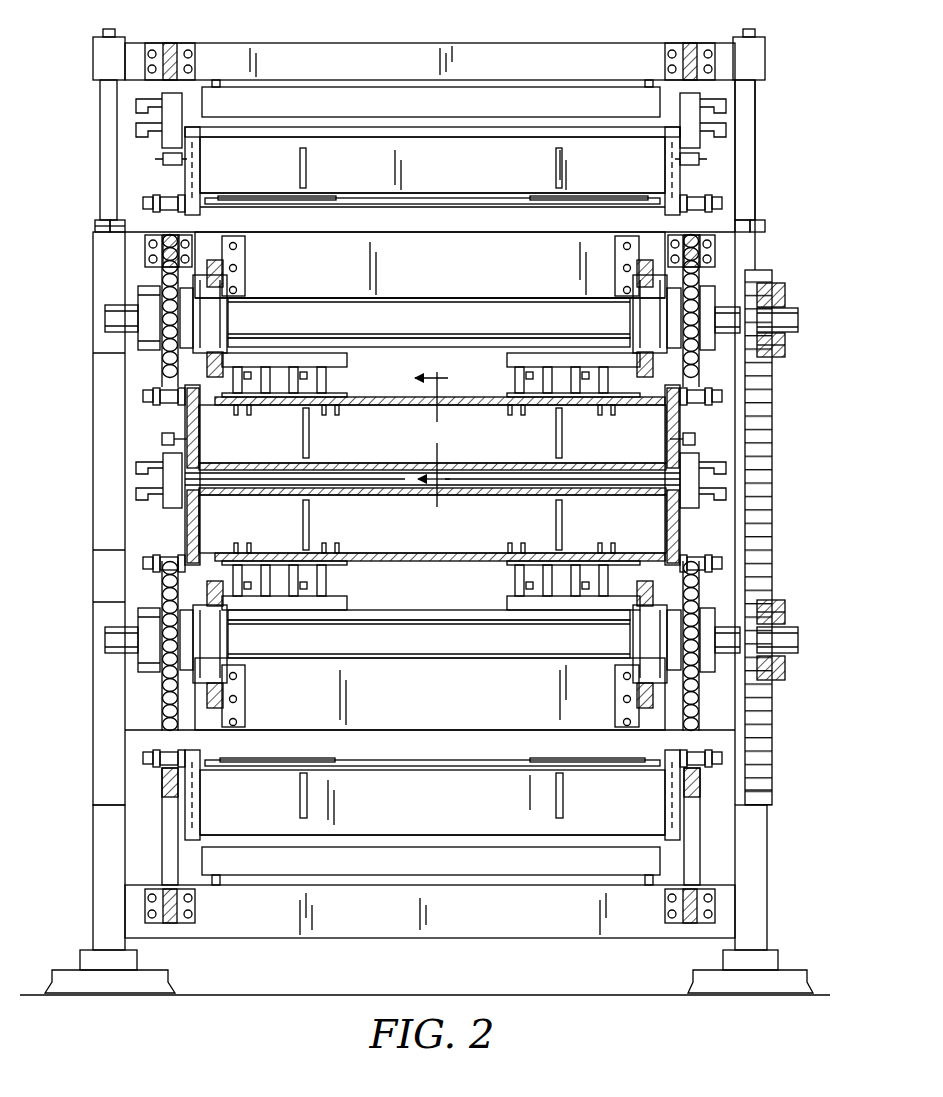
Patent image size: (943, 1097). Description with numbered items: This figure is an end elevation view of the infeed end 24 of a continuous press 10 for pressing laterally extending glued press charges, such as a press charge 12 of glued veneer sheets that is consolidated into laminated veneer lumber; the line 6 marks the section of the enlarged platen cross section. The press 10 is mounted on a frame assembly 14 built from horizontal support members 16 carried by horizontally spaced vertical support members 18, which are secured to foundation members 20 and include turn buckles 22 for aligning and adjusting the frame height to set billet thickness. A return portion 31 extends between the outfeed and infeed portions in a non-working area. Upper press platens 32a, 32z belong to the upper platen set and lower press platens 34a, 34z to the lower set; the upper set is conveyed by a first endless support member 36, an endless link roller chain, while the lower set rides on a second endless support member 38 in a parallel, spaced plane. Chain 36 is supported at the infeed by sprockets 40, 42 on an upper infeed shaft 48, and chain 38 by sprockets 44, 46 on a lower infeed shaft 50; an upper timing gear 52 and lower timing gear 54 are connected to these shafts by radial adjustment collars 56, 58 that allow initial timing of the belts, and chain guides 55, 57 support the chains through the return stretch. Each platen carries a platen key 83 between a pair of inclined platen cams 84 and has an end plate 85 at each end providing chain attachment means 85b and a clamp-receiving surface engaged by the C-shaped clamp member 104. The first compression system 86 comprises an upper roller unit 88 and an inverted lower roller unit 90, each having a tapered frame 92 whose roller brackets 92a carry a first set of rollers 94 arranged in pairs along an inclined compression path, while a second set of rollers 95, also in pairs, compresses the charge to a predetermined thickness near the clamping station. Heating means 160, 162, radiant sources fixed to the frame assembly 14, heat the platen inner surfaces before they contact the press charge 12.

The section line 6 is at (431, 439).
The continuous press 10 is at (792, 128).
The press charge 12 is at (463, 472).
The frame assembly 14 is at (276, 947).
The horizontal support members 16 is at (725, 43).
The vertical support members 18 is at (93, 836).
The foundation members 20 is at (55, 985).
The turn buckles 22 is at (93, 473).
The infeed end 24 is at (795, 504).
The return portion 31 is at (536, 75).
The upper press platen 32a is at (348, 450).
The upper press platen 32z is at (412, 172).
The lower press platen 34a is at (373, 529).
The lower press platen 34z is at (408, 812).
The first endless support member 36 is at (177, 195).
The second endless support member 38 is at (172, 556).
The sprocket 40 is at (140, 346).
The sprocket 42 is at (712, 397).
The sprocket 44 is at (150, 681).
The sprocket 46 is at (660, 701).
The upper infeed shaft 48 is at (800, 311).
The lower infeed shaft 50 is at (798, 641).
The upper timing gear 52 is at (772, 450).
The lower timing gear 54 is at (772, 746).
The chain guide 55 is at (125, 230).
The radial adjustment collar 56 is at (786, 344).
The chain guide 57 is at (162, 818).
The radial adjustment collar 58 is at (786, 626).
The platen key 83 is at (500, 193).
The inclined platen cams 84 is at (283, 198).
The end plate 85 is at (203, 184).
The chain attachment means 85b is at (143, 203).
The first compression system 86 is at (536, 297).
The upper roller unit 88 is at (440, 350).
The lower roller unit 90 is at (430, 616).
The tapered frame 92 is at (381, 355).
The roller brackets 92a is at (340, 376).
The rollers 94 is at (291, 372).
The second set of rollers 95 is at (248, 405).
The clamp member 104 is at (162, 146).
The heating means 160 is at (308, 86).
The heating means 162 is at (520, 879).